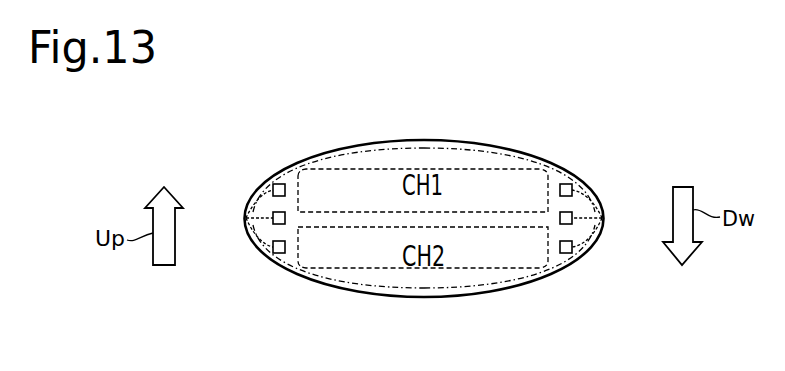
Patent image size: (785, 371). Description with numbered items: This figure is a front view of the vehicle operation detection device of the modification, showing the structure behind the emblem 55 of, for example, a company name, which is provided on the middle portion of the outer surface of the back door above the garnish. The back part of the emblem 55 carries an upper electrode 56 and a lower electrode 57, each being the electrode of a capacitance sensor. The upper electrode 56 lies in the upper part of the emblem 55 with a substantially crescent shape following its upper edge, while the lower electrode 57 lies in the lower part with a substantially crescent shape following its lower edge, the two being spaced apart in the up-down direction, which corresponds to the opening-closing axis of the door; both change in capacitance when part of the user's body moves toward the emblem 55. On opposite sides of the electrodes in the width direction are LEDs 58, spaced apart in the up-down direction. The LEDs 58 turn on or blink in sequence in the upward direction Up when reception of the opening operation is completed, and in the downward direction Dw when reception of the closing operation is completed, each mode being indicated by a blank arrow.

The emblem 55 is at (554, 167).
The upper electrode 56 is at (460, 139).
The lower electrode 57 is at (458, 289).
The LEDs 58 is at (246, 218).